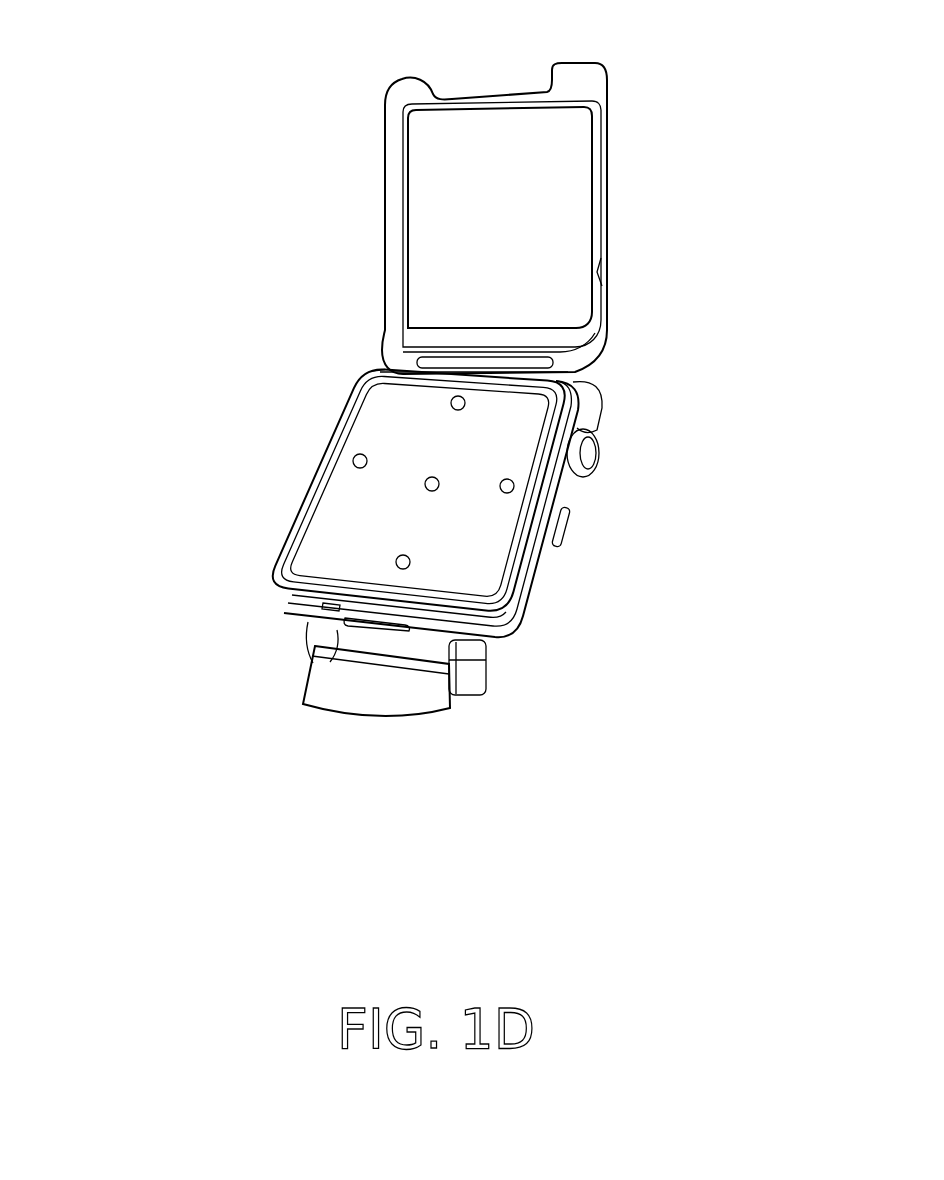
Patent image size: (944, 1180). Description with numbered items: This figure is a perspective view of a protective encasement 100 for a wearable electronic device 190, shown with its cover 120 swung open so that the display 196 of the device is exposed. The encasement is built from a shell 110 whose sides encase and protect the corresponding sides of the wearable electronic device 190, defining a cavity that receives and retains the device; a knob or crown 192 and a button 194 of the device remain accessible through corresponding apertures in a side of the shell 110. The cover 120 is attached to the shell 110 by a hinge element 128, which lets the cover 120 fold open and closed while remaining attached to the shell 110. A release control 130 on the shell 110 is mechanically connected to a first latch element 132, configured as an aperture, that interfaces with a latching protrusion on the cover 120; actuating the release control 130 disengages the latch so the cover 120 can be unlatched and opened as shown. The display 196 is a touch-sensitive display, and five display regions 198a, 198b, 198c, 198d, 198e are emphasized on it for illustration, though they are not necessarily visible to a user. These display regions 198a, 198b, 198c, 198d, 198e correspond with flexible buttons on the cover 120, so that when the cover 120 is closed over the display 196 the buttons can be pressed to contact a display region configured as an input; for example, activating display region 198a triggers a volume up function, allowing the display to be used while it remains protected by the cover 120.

The protective encasement 100 is at (167, 0).
The shell 110 is at (277, 560).
The cover 120 is at (608, 136).
The hinge element 128 is at (595, 357).
The release control 130 is at (488, 665).
The first latch element 132 is at (330, 620).
The wearable electronic device 190 is at (550, 543).
The crown 192 is at (598, 455).
The button 194 is at (565, 548).
The display 196 is at (478, 547).
The display region 198a is at (354, 458).
The display region 198b is at (427, 478).
The display region 198c is at (515, 487).
The display region 198d is at (453, 399).
The display region 198e is at (397, 564).